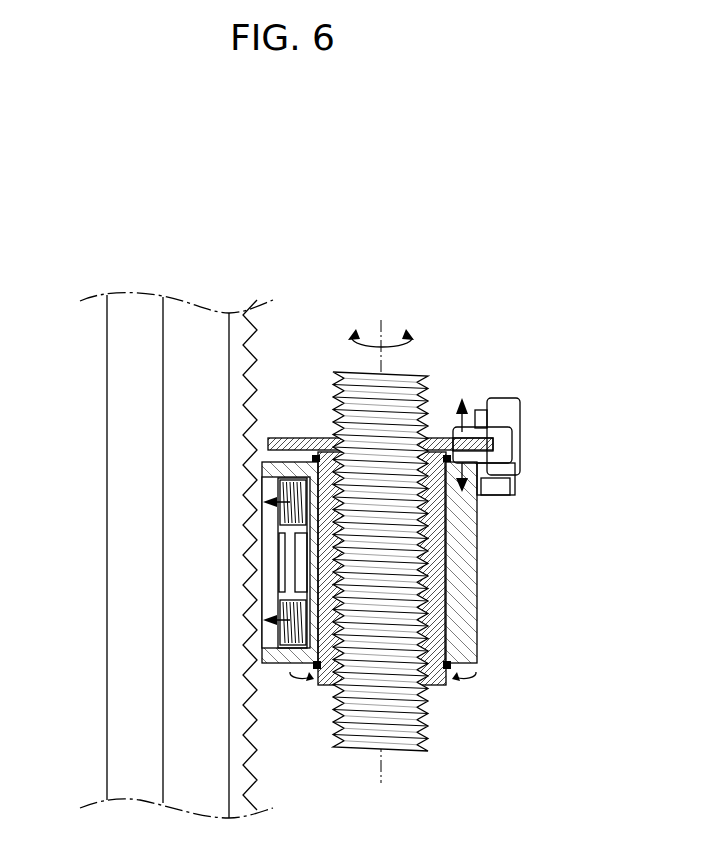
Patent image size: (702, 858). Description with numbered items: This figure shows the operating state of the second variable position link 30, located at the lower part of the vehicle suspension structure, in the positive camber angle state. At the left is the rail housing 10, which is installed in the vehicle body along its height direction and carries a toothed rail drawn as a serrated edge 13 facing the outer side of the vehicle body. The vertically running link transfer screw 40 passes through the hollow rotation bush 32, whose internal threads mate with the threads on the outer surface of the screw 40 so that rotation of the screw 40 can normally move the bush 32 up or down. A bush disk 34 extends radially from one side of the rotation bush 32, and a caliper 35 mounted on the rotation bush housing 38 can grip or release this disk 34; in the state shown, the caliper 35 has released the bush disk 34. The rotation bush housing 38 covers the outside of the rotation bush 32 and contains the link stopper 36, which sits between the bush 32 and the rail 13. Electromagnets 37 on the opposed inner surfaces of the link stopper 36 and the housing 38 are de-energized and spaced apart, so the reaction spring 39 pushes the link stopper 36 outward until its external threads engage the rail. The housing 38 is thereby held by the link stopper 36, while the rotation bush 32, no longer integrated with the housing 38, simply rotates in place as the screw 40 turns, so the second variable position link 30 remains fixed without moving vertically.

The rail housing 10 is at (135, 450).
The side wall 13 is at (250, 387).
The second variable position link 30 is at (304, 194).
The rotation bush 32 is at (437, 533).
The bush disk 34 is at (495, 447).
The caliper 35 is at (488, 438).
The link stopper 36 is at (265, 595).
The electromagnets 37 is at (300, 557).
The rotation bush housing 38 is at (463, 600).
The reaction spring 39 is at (265, 613).
The link transfer screw 40 is at (430, 395).